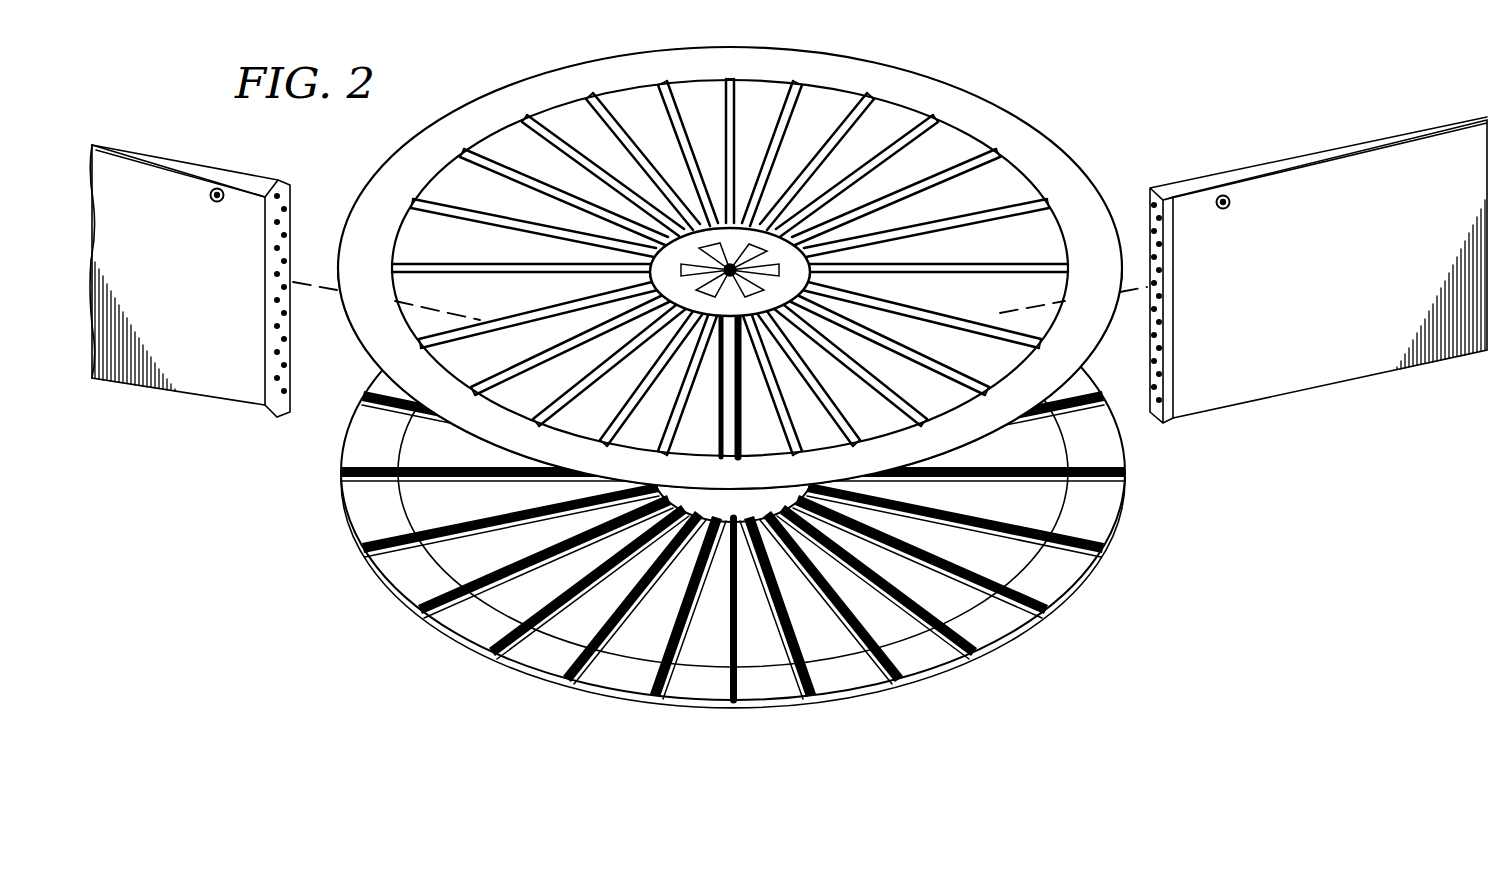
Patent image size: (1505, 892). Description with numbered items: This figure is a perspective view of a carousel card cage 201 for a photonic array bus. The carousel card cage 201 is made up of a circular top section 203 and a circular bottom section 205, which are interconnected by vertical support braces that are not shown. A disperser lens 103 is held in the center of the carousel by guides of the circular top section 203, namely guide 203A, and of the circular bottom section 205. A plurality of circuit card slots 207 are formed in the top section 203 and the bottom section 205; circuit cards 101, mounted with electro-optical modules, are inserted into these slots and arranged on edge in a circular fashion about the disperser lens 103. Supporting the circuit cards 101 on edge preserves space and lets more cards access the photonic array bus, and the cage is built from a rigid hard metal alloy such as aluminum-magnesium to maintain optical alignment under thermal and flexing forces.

The circuit cards 101 is at (178, 403).
The disperser lens 103 is at (752, 398).
The carousel card cage 201 is at (1104, 632).
The circular top section 203 is at (1057, 141).
The guide 203A is at (713, 228).
The circular bottom section 205 is at (1128, 516).
The circuit card slots 207 is at (373, 476).